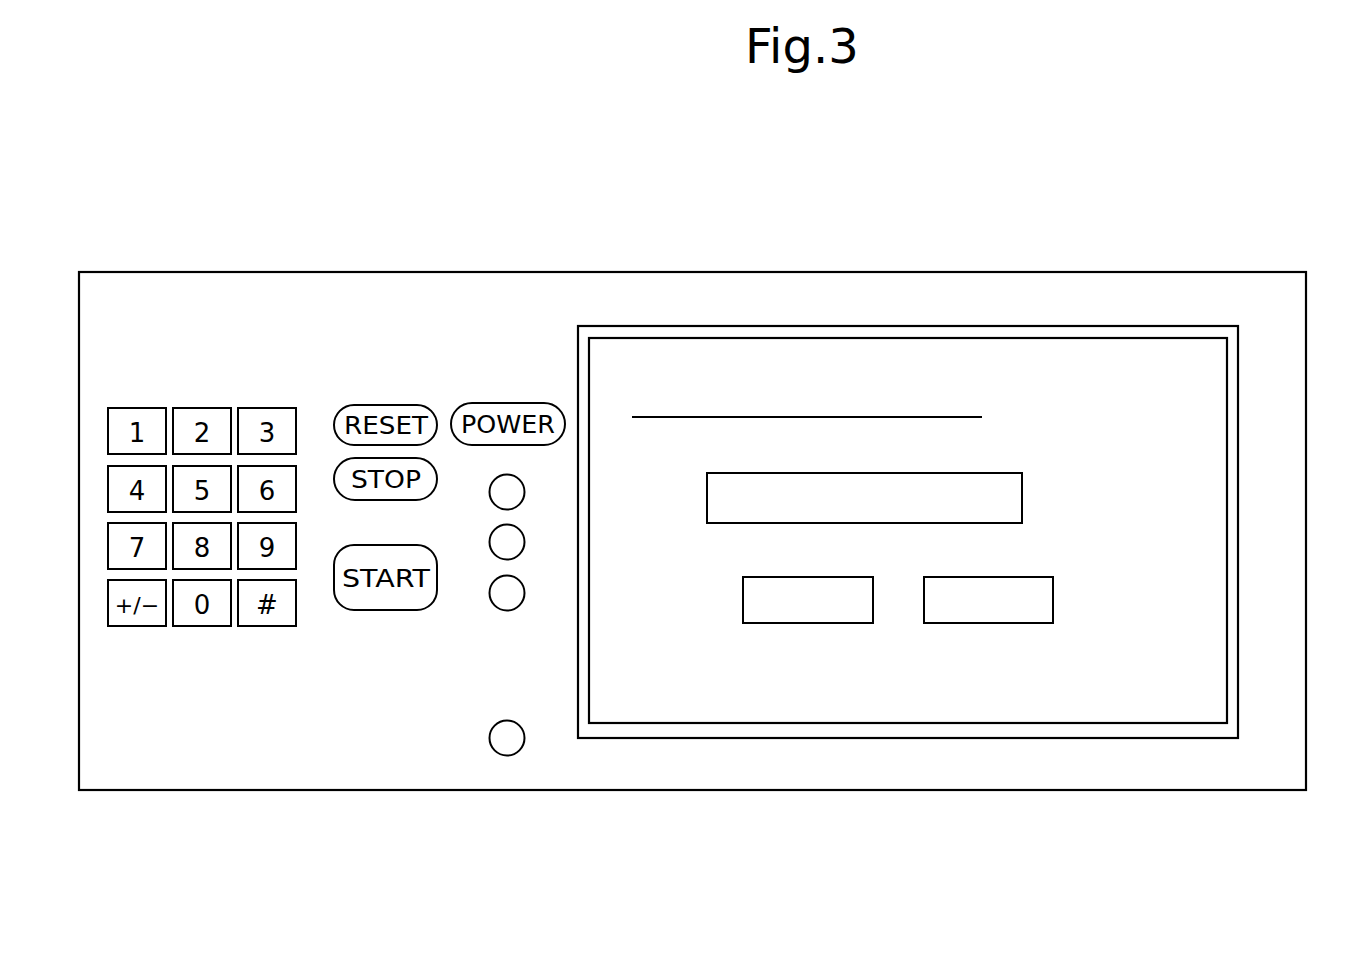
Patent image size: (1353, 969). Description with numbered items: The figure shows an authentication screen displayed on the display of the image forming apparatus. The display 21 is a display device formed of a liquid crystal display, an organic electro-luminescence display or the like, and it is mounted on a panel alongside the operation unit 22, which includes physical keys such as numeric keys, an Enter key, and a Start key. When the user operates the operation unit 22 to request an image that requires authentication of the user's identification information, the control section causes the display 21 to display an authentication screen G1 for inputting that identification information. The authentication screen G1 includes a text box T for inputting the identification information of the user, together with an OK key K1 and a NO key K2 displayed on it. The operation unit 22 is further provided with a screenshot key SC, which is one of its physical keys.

The display 21 is at (1084, 325).
The operation unit 22 is at (1253, 274).
The text box T is at (1022, 500).
The OK key K1 is at (808, 623).
The NO key K2 is at (988, 623).
The screenshot key SC is at (507, 755).
The authentication screen G1 is at (1148, 695).